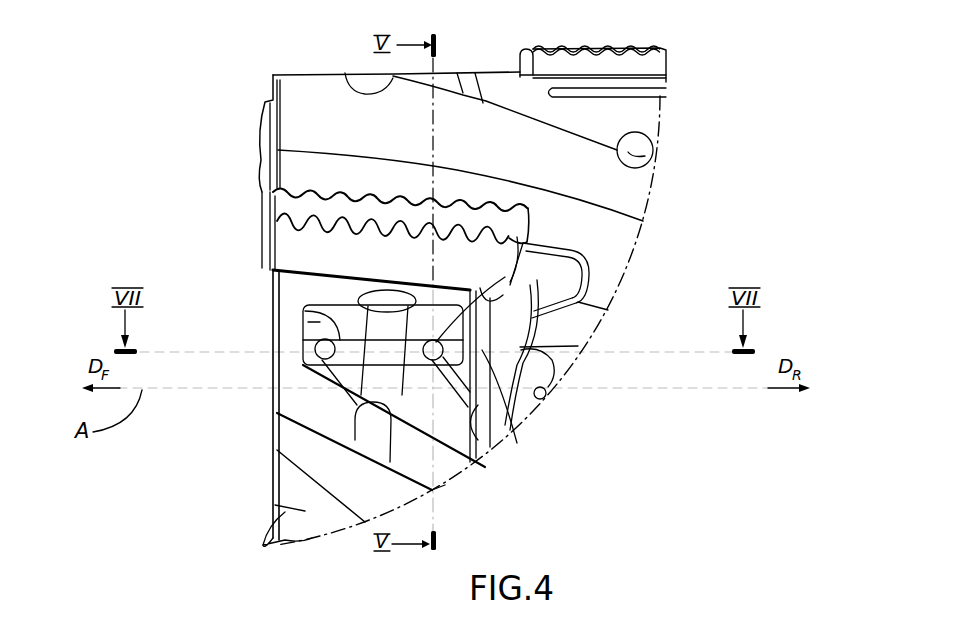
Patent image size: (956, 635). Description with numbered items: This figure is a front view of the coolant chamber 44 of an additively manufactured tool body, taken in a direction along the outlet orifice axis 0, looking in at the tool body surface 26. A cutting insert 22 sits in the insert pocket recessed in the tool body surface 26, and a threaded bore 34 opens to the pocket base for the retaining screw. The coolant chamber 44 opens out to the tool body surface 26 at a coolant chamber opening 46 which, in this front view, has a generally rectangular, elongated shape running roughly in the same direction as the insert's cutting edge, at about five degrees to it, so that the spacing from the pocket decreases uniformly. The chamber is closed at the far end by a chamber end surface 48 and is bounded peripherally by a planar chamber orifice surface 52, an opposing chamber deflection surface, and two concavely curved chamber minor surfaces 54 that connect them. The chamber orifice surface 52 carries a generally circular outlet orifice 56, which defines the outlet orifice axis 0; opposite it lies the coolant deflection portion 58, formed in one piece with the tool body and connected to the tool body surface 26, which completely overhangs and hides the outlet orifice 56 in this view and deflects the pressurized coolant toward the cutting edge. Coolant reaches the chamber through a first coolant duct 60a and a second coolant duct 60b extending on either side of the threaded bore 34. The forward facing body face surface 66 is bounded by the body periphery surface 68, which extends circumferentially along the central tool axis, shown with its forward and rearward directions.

The origin / reference point 0 is at (513, 277).
The cutting insert 22 is at (250, 208).
The tool body surface 26 is at (330, 408).
The threaded bore 34 is at (276, 286).
The coolant chamber 44 is at (292, 322).
The coolant chamber opening 46 is at (480, 338).
The chamber end surface 48 is at (337, 403).
The chamber orifice surface 52 is at (303, 343).
The chamber minor surfaces 54 is at (315, 358).
The outlet orifice 56 is at (318, 322).
The coolant deflection portion 58 is at (385, 335).
The first coolant duct 60a is at (483, 410).
The second coolant duct 60b is at (455, 437).
The body face surface 66 is at (278, 140).
The body periphery surface 68 is at (593, 118).